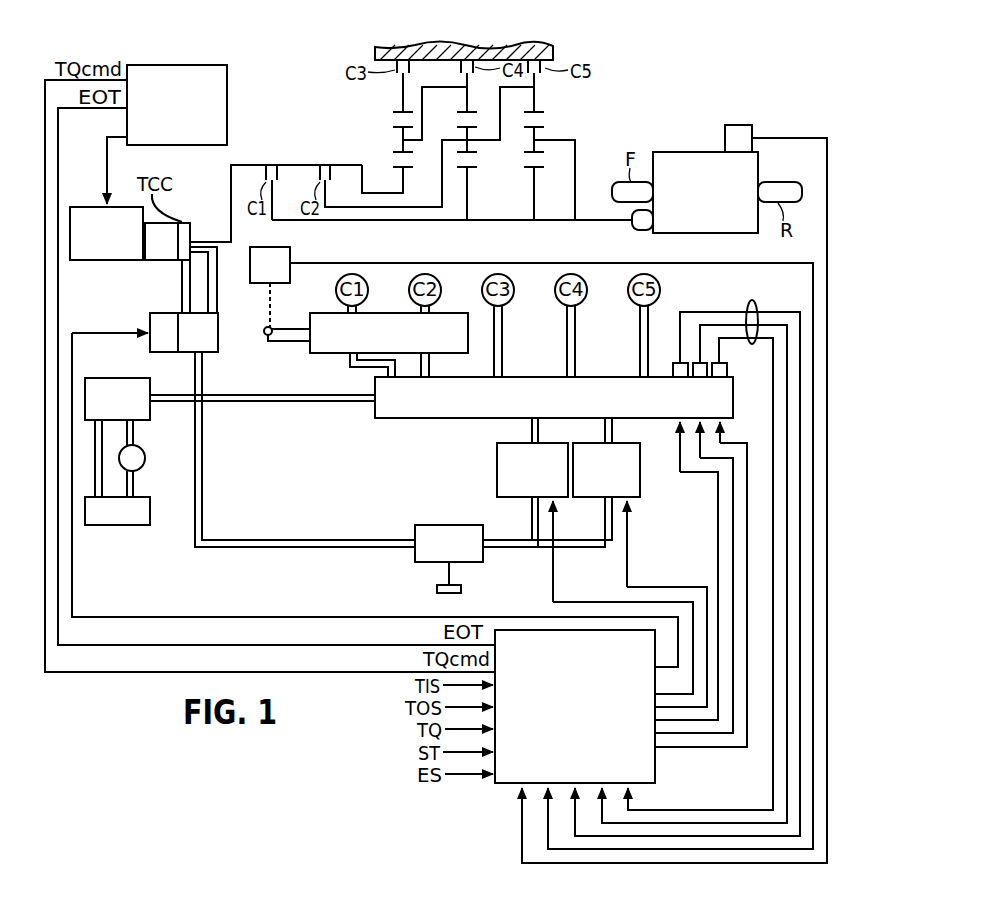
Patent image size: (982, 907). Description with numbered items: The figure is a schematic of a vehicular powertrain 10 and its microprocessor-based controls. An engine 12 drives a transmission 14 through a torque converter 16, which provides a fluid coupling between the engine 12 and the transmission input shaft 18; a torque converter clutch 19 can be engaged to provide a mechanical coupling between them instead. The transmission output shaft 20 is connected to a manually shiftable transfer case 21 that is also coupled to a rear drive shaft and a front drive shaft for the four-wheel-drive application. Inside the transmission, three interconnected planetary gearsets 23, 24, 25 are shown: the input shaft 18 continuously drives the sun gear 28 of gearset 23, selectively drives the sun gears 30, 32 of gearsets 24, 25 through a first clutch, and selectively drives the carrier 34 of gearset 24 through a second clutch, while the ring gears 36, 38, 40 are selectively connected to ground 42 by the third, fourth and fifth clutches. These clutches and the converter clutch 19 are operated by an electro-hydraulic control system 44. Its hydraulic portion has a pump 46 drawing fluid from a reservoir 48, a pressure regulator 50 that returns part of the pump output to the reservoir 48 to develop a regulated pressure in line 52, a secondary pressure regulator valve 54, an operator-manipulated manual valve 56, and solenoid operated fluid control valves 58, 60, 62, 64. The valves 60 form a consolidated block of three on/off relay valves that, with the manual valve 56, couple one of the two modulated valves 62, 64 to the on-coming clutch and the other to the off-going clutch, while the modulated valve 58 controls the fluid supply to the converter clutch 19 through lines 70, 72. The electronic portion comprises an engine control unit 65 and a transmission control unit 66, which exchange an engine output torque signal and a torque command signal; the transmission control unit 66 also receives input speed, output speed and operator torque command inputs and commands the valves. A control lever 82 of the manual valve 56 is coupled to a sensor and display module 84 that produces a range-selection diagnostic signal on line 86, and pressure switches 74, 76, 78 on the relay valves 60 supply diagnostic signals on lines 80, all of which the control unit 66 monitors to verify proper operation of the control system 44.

The vehicular powertrain 10 is at (281, 81).
The engine 12 is at (100, 261).
The transmission 14 is at (368, 132).
The torque converter 16 is at (160, 261).
The transmission input shaft 18 is at (231, 170).
The torque converter clutch 19 is at (191, 229).
The transmission output shaft 20 is at (590, 219).
The transfer case 21 is at (692, 152).
The planetary gearset 23 is at (414, 150).
The planetary gearset 24 is at (479, 150).
The planetary gearset 25 is at (549, 129).
The sun gear 28 is at (403, 180).
The sun gear 30 is at (470, 212).
The sun gear 32 is at (537, 212).
The carrier 34 is at (450, 138).
The ring gear 36 is at (400, 91).
The ring gear 38 is at (460, 73).
The ring gear 40 is at (545, 82).
The ground 42 is at (565, 51).
The electro-hydraulic control system 44 is at (832, 299).
The pump 46 is at (146, 455).
The reservoir 48 is at (151, 510).
The pressure regulator 50 is at (117, 378).
The line 52 is at (290, 402).
The secondary pressure regulator valve 54 is at (414, 560).
The manual valve 56 is at (336, 354).
The solenoid operated fluid control valve 58 is at (220, 342).
The fluid control valves 60 is at (400, 419).
The modulated fluid control valve 62 is at (497, 488).
The modulated fluid control valve 64 is at (641, 488).
The engine control unit 65 is at (228, 106).
The transmission control unit 66 is at (503, 784).
The line 70 is at (181, 302).
The line 72 is at (214, 300).
The pressure switch 74 is at (676, 362).
The pressure switch 76 is at (706, 380).
The pressure switch 78 is at (728, 370).
The lines 80 is at (760, 300).
The control lever 82 is at (270, 341).
The sensor and display module 84 is at (290, 256).
The line 86 is at (698, 264).